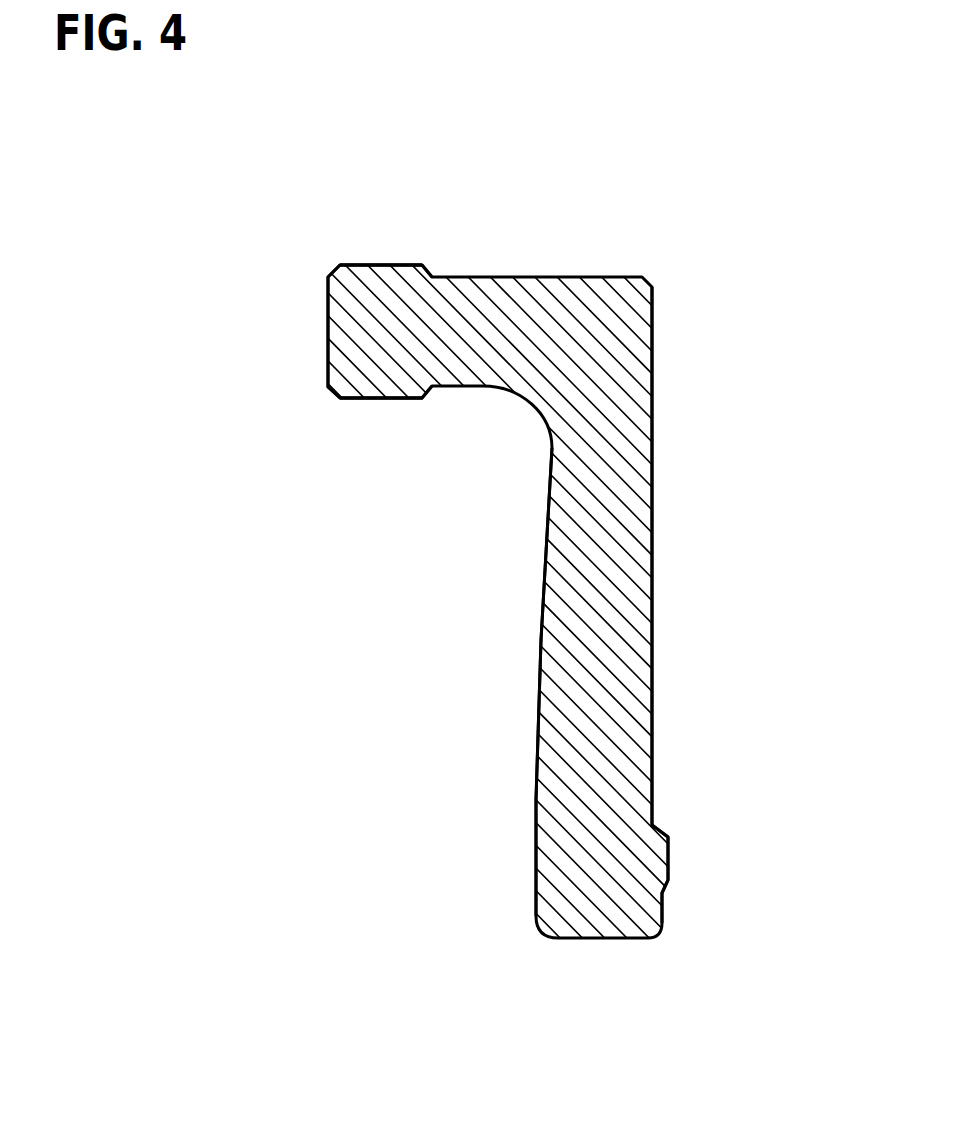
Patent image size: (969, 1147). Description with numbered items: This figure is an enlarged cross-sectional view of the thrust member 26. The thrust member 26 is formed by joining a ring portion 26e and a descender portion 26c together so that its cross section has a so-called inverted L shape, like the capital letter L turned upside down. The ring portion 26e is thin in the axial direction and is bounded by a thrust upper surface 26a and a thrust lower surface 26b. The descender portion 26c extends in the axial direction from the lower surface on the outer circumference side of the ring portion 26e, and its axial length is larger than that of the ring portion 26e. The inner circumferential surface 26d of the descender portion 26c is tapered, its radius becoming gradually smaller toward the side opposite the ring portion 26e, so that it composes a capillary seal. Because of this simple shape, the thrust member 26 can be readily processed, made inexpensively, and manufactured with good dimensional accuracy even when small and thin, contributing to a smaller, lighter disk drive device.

The thrust member 26 is at (528, 1112).
The thrust upper surface 26a is at (375, 265).
The thrust lower surface 26b is at (373, 398).
The descender portion 26c is at (618, 692).
The inner circumferential surface 26d is at (542, 653).
The ring portion 26e is at (398, 341).